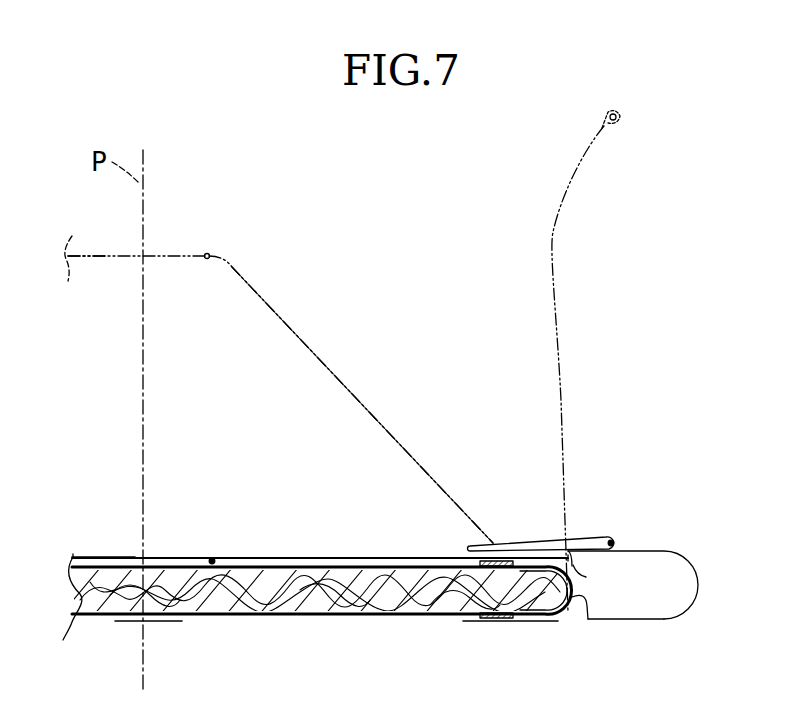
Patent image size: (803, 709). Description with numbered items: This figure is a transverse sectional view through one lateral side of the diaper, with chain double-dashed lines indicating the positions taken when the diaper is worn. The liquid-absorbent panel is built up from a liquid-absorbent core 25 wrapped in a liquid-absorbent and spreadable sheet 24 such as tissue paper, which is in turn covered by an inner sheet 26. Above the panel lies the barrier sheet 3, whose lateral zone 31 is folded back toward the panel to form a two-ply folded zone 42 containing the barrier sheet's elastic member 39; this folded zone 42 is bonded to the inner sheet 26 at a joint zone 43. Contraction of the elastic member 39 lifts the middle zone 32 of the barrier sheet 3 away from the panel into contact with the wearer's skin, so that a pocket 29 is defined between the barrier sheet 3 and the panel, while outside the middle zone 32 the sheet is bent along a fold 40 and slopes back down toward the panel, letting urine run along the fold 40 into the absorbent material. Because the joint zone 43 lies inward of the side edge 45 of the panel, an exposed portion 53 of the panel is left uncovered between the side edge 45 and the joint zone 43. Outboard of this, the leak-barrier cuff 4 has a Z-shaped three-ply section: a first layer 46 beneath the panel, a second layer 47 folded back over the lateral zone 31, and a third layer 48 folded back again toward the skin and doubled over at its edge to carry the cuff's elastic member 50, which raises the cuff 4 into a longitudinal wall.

The barrier sheet 3 is at (100, 554).
The leak-barrier cuff 4 is at (562, 407).
The liquid-absorbent and spreadable sheet 24 is at (223, 618).
The liquid-absorbent core 25 is at (357, 606).
The inner sheet 26 is at (184, 566).
The pocket 29 is at (100, 383).
The lateral zone 31 is at (276, 556).
The middle zone 32 is at (127, 556).
The barrier sheet's elastic member 39 is at (212, 558).
The fold 40 is at (313, 556).
The folded zone 42 is at (586, 577).
The joint zone 43 is at (476, 617).
The side edge 45 is at (584, 604).
The first layer 46 is at (620, 621).
The second layer 47 is at (640, 550).
The third layer 48 is at (526, 546).
The cuff's elastic member 50 is at (611, 540).
The exposed portion 53 is at (530, 561).